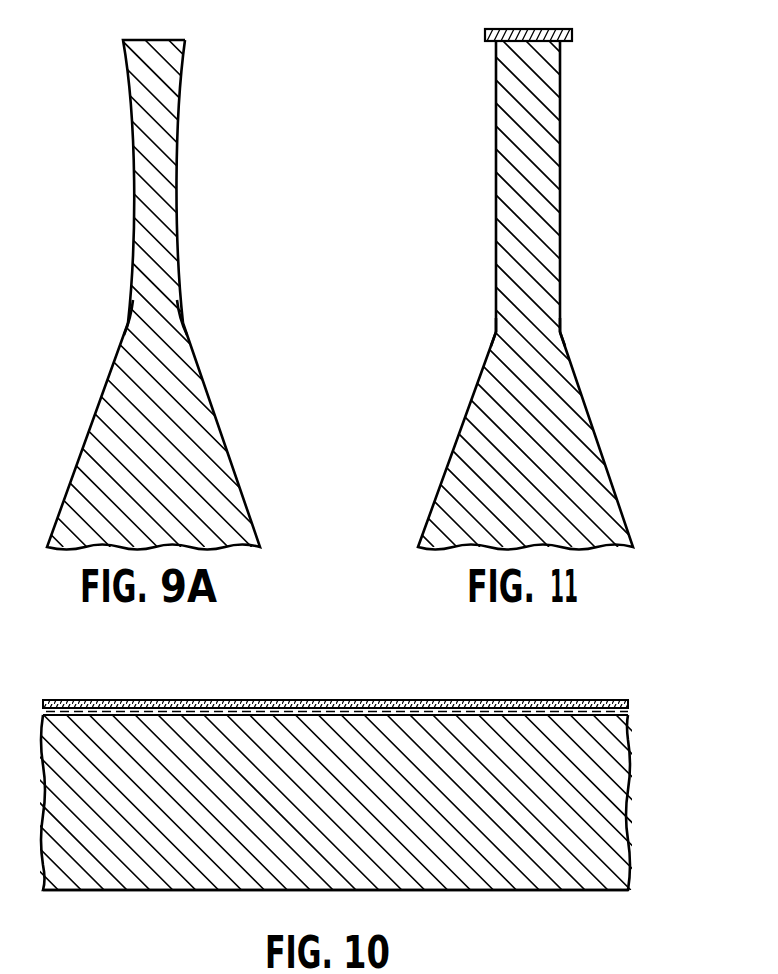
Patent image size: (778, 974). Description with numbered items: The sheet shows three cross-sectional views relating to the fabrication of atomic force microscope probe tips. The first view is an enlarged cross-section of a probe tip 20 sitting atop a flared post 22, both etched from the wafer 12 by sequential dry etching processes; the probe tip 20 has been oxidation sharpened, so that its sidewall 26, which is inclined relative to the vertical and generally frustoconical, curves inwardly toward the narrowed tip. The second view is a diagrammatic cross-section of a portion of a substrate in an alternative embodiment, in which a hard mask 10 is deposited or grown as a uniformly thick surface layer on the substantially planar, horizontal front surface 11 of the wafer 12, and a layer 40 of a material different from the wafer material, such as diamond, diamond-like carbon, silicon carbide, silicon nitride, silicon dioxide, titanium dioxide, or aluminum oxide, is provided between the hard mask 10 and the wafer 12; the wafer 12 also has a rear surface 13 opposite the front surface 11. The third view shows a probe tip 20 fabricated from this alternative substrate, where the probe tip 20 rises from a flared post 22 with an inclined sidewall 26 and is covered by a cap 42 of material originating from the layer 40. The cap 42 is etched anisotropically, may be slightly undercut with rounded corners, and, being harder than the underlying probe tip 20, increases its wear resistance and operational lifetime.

In FIG. 10, the hard mask 10 is at (316, 700).
In FIG. 10, the front surface 11 is at (396, 709).
In FIG. 10, the wafer 12 is at (631, 771).
In FIG. 10, the rear surface 13 is at (447, 892).
In FIG. 9A, the probe tip 20 is at (140, 166).
In FIG. 11, the probe tip 20 is at (515, 168).
In FIG. 9A, the flared post 22 is at (92, 452).
In FIG. 11, the flared post 22 is at (462, 452).
In FIG. 9A, the sidewall 26 is at (116, 358).
In FIG. 11, the sidewall 26 is at (482, 356).
In FIG. 10, the layer 40 is at (269, 700).
In FIG. 11, the cap 42 is at (485, 36).